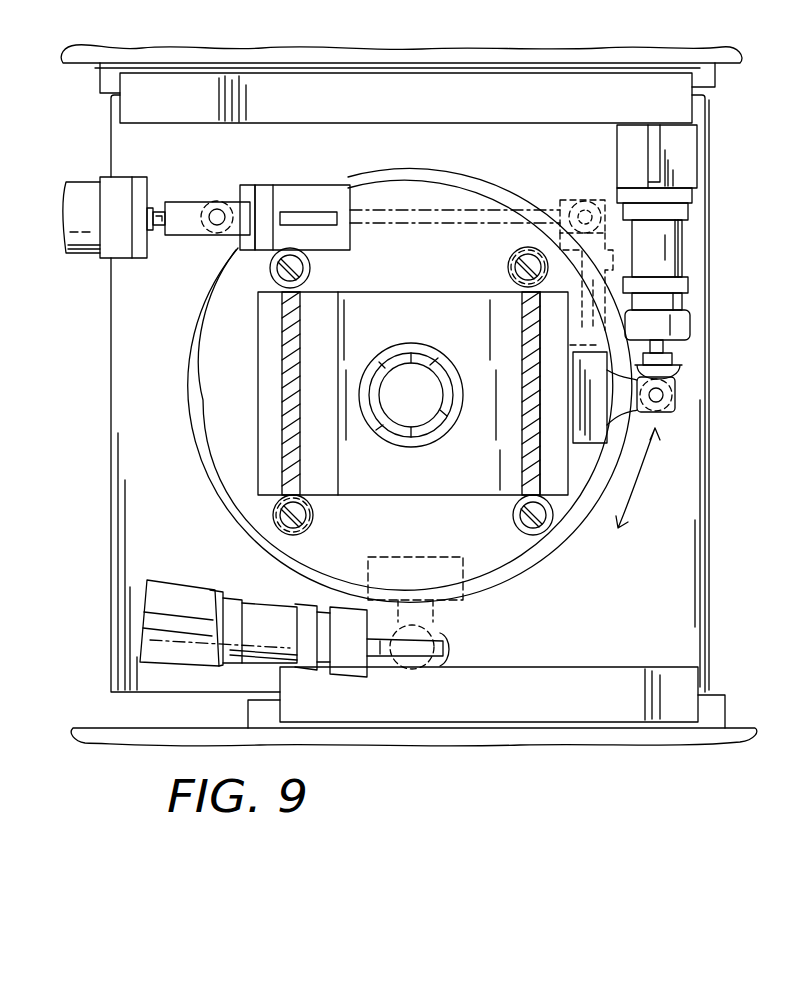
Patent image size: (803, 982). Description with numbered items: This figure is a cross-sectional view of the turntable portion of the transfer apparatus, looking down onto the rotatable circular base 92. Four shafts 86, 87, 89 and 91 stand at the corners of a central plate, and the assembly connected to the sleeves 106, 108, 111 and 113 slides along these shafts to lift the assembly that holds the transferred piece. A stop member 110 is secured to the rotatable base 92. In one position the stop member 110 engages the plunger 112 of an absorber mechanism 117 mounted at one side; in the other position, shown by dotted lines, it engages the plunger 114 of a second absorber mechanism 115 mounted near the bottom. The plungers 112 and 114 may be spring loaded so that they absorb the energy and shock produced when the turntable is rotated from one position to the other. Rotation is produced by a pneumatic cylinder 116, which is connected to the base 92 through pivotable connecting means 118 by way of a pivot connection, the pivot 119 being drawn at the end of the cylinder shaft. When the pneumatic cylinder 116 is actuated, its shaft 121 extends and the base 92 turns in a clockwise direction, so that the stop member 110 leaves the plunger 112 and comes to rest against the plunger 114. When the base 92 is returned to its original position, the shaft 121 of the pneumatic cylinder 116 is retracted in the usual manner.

The shaft 86 is at (310, 527).
The shaft 87 is at (514, 521).
The shaft 89 is at (306, 267).
The shaft 91 is at (514, 269).
The rotatable circular base 92 is at (513, 567).
The sleeve 106 is at (314, 513).
The sleeve 108 is at (556, 534).
The stop member 110 is at (649, 449).
The sleeve 111 is at (312, 280).
The plunger 112 is at (680, 368).
The sleeve 113 is at (520, 256).
The plunger 114 is at (455, 647).
The absorber mechanism 115 is at (258, 605).
The pneumatic cylinder 116 is at (80, 252).
The absorber mechanism 117 is at (670, 248).
The pivotable connecting means 118 is at (302, 188).
The pivot pin 119 is at (218, 209).
The shaft 121 is at (158, 228).